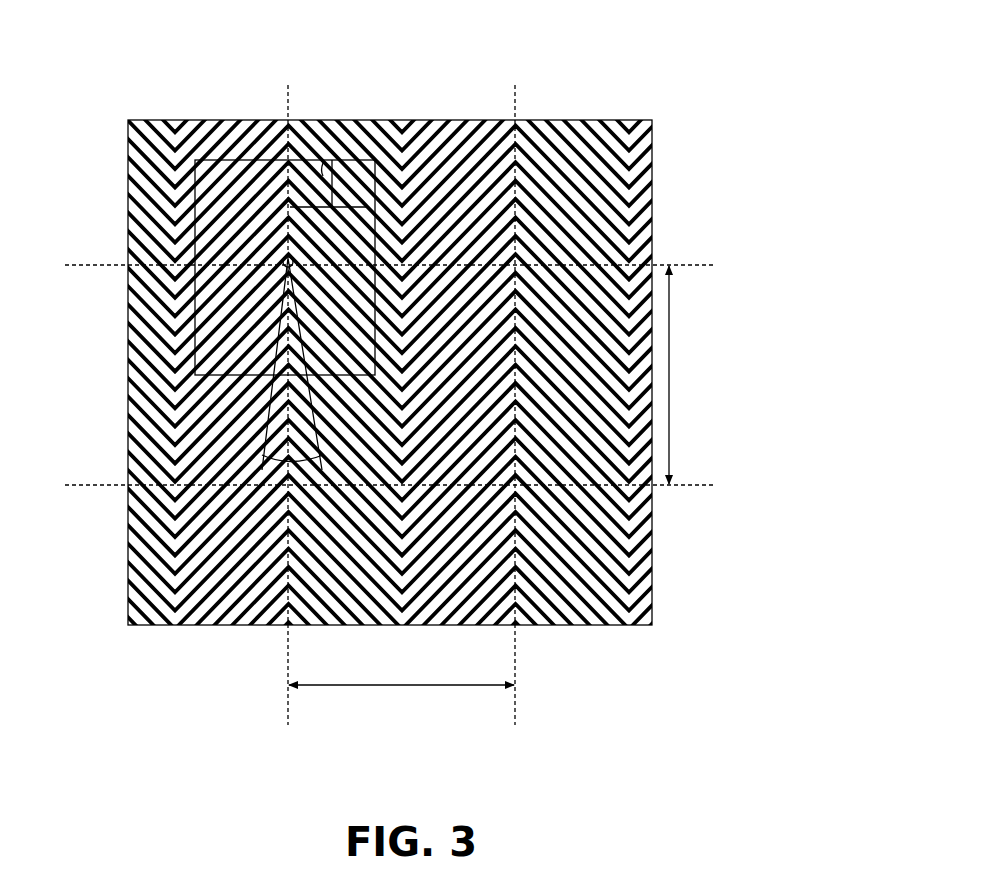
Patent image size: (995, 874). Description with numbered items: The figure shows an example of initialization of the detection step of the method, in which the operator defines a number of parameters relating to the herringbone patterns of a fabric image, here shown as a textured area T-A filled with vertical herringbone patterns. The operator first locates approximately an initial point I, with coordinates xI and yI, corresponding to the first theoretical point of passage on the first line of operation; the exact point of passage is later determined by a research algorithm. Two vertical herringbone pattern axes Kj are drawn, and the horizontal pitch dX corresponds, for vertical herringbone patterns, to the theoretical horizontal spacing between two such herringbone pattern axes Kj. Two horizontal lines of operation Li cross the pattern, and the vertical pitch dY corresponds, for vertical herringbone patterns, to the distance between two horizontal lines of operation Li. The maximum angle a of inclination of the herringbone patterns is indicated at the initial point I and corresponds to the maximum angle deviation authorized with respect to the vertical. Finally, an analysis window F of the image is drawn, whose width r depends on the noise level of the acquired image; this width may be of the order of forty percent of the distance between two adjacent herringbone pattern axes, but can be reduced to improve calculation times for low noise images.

The textured area / pattern region T-A is at (666, 74).
The herringbone pattern axes Kj is at (288, 709).
The horizontal lines of operation Li is at (695, 265).
The vertical pitch dY is at (686, 375).
The horizontal pitch dX is at (401, 673).
The analysis window F is at (357, 160).
The width of the analysis window r is at (312, 150).
The initial point I is at (286, 257).
The maximum angle of inclination a is at (282, 454).